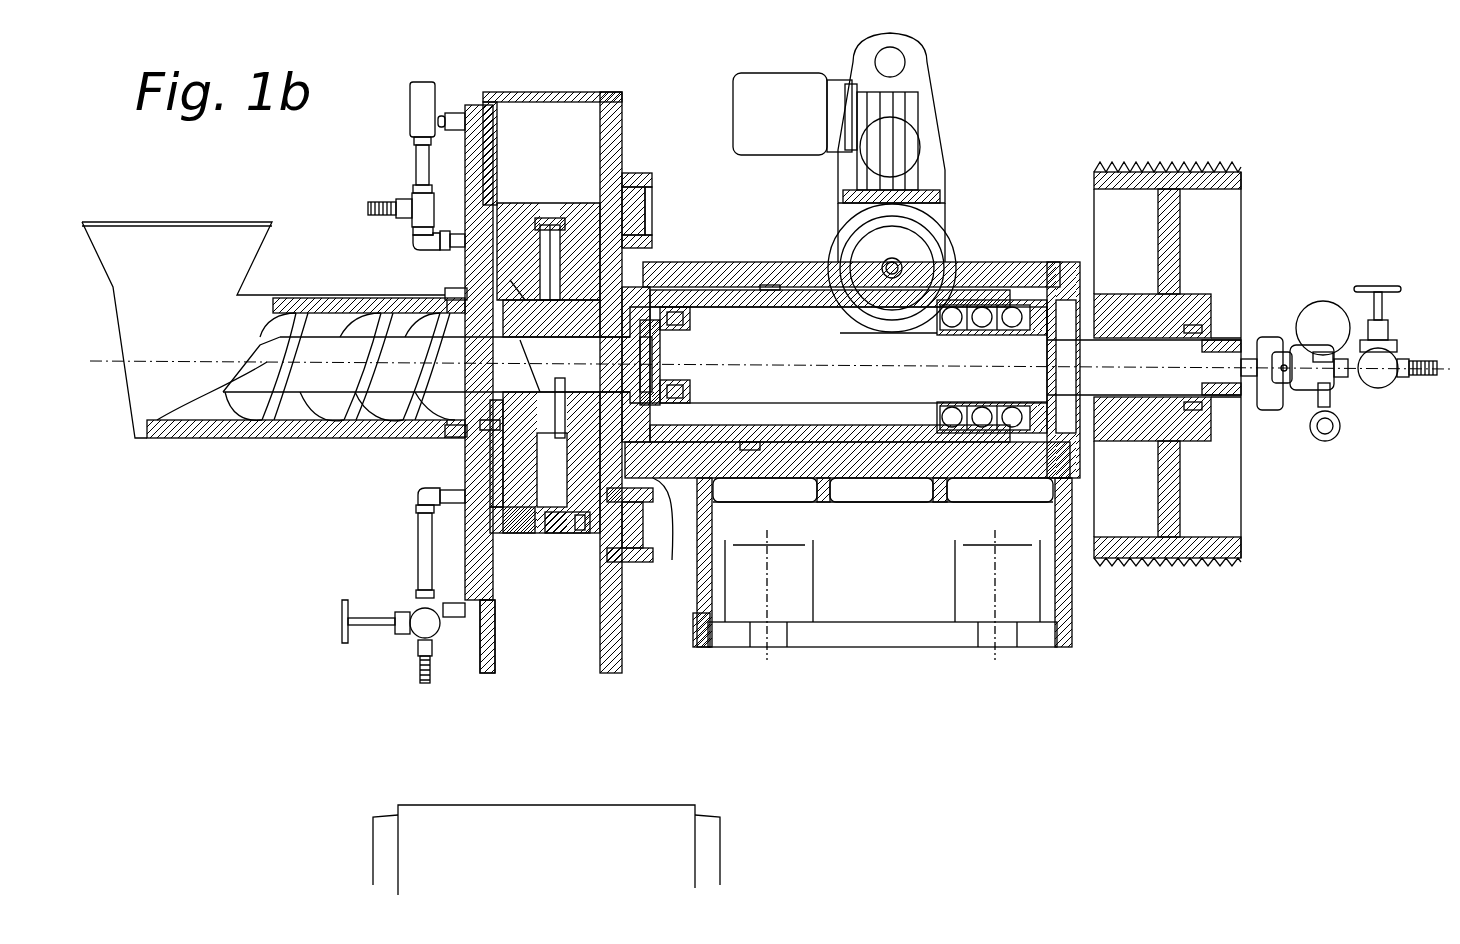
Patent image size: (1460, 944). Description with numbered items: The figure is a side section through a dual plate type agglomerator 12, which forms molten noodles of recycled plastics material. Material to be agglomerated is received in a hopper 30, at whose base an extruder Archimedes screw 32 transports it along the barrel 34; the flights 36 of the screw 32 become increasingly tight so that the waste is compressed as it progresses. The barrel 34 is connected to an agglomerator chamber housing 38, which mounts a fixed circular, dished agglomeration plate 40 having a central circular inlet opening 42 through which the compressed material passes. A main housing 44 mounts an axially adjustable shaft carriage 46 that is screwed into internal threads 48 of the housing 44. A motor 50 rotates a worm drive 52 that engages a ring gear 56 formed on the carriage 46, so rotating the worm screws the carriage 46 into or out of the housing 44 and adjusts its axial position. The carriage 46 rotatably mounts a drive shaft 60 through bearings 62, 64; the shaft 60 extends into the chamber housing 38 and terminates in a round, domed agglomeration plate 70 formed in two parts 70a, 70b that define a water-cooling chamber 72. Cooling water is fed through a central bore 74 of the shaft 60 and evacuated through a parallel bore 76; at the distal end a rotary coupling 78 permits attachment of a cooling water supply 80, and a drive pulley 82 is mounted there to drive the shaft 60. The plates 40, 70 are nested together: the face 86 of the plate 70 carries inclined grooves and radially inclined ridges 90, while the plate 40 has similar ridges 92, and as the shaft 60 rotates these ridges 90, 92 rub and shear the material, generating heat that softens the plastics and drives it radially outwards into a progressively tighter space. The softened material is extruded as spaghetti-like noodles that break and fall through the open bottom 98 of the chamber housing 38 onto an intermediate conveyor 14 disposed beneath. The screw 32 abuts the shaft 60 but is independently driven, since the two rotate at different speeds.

The agglomerator 12 is at (1070, 76).
The intermediate conveyor 14 is at (660, 825).
The hopper 30 is at (176, 240).
The extruder Archimedes screw 32 is at (270, 385).
The barrel 34 is at (290, 418).
The flights 36 is at (275, 332).
The agglomerator chamber housing 38 is at (466, 105).
The agglomeration plate 40 is at (510, 203).
The central circular inlet opening 42 is at (443, 293).
The main housing 44 is at (733, 262).
The shaft carriage 46 is at (695, 288).
The internal threads 48 is at (780, 262).
The motor 50 is at (787, 68).
The worm drive 52 is at (905, 262).
The ring gear 56 is at (888, 480).
The drive shaft 60 is at (820, 392).
The bearing 62 is at (690, 330).
The bearing 64 is at (960, 352).
The agglomeration plate 70 is at (560, 197).
The plate part 70a is at (542, 533).
The plate part 70b is at (572, 533).
The water-cooling chamber 72 is at (630, 185).
The central bore 74 is at (678, 370).
The parallel bore 76 is at (665, 490).
The rotary coupling 78 is at (1268, 337).
The cooling water supply 80 is at (1407, 310).
The drive pulley 82 is at (1210, 160).
The face 86 is at (425, 478).
The ridges 90 is at (475, 425).
The ridges 92 is at (463, 267).
The open bottom 98 is at (497, 668).